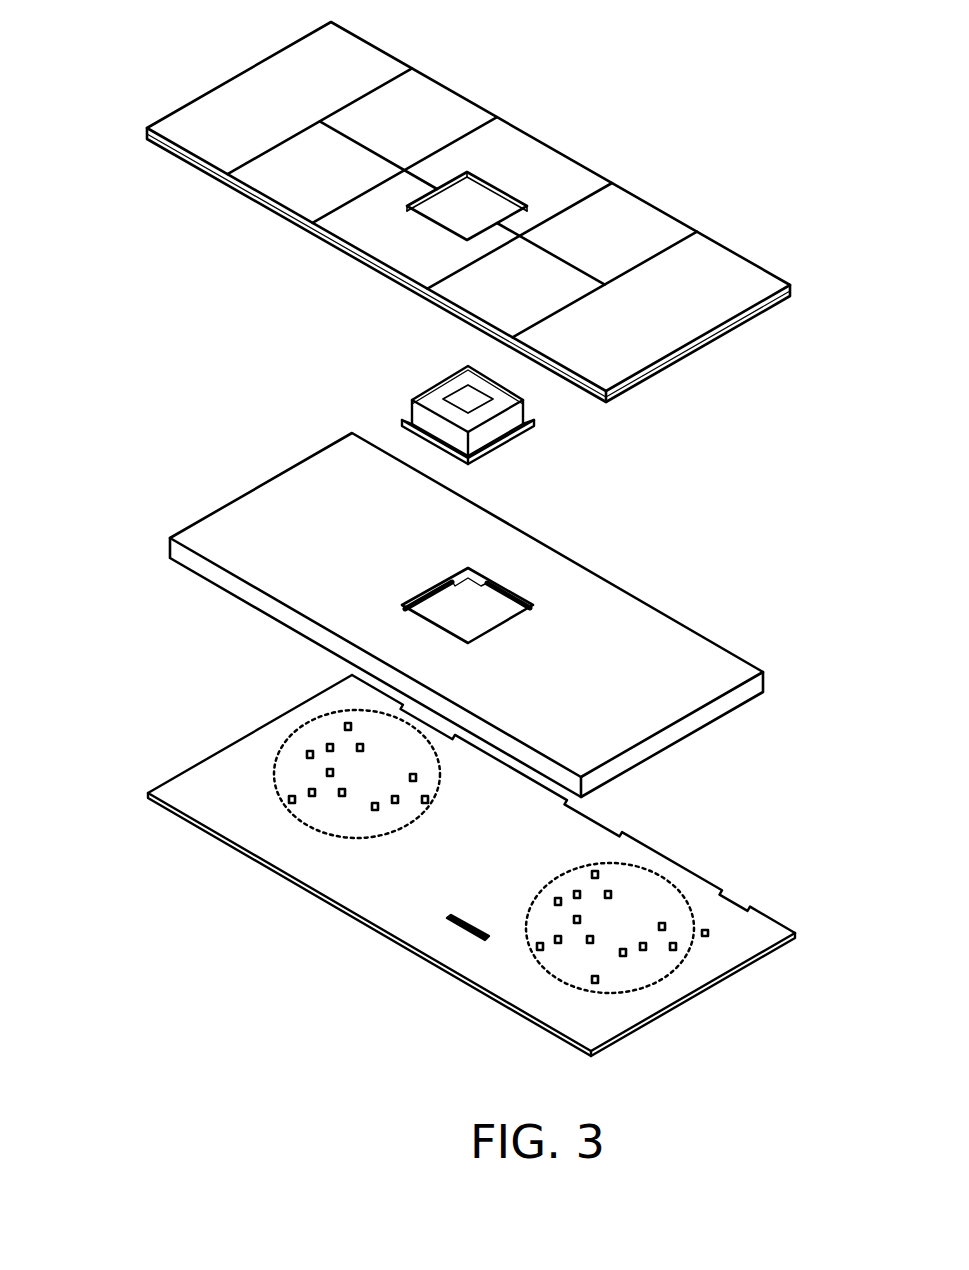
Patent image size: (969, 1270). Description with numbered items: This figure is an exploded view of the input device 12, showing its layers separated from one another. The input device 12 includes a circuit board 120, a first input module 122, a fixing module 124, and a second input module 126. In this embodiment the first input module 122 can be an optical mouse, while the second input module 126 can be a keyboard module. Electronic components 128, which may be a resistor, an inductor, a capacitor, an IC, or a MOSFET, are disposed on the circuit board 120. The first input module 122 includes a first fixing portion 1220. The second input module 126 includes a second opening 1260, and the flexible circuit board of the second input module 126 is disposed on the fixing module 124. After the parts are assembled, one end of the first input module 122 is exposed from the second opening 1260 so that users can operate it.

The input device 12 is at (825, 22).
The circuit board 120 is at (405, 879).
The first input module 122 is at (475, 407).
The fixing module 124 is at (235, 478).
The second input module 126 is at (438, 211).
The electronic components 128 is at (277, 756).
The first fixing portion 1220 is at (523, 440).
The second opening 1260 is at (472, 217).